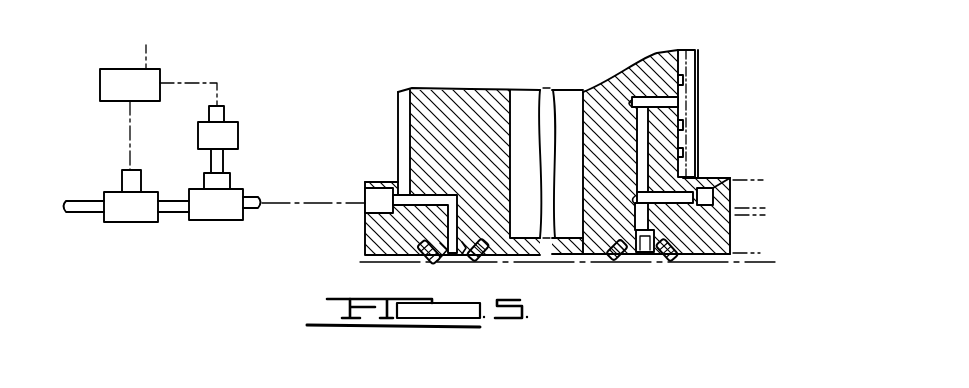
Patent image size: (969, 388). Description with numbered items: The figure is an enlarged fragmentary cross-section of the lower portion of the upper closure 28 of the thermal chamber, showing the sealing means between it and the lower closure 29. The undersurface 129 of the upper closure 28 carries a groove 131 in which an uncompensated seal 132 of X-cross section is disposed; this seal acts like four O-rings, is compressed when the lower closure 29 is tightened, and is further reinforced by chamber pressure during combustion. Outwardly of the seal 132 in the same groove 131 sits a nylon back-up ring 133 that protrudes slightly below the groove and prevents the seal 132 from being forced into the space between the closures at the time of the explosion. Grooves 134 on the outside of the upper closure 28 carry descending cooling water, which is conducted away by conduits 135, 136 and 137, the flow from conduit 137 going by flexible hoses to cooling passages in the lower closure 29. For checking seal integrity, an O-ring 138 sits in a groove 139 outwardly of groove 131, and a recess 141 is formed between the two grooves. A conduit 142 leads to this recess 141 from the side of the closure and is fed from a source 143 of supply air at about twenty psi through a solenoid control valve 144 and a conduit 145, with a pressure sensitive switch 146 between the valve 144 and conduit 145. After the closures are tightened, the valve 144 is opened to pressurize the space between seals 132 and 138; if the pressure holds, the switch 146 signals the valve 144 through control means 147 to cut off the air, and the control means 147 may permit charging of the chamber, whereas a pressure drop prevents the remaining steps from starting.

The upper closure 28 is at (468, 86).
The lower closure 29 is at (786, 254).
The undersurface 129 is at (397, 259).
The groove 131 is at (623, 211).
The uncompensated seal 132 is at (612, 258).
The back-up ring 133 is at (628, 261).
The grooves 134 is at (680, 90).
The conduit 135 is at (663, 115).
The conduit 136 is at (646, 160).
The conduit 137 is at (690, 193).
The O-ring 138 is at (440, 248).
The groove 139 is at (420, 246).
The recess 141 is at (452, 256).
The conduit 142 is at (430, 194).
The source of supply air 143 is at (77, 207).
The solenoid control valve 144 is at (138, 177).
The conduit 145 is at (330, 200).
The pressure sensitive switch 146 is at (232, 135).
The control means 147 is at (110, 84).